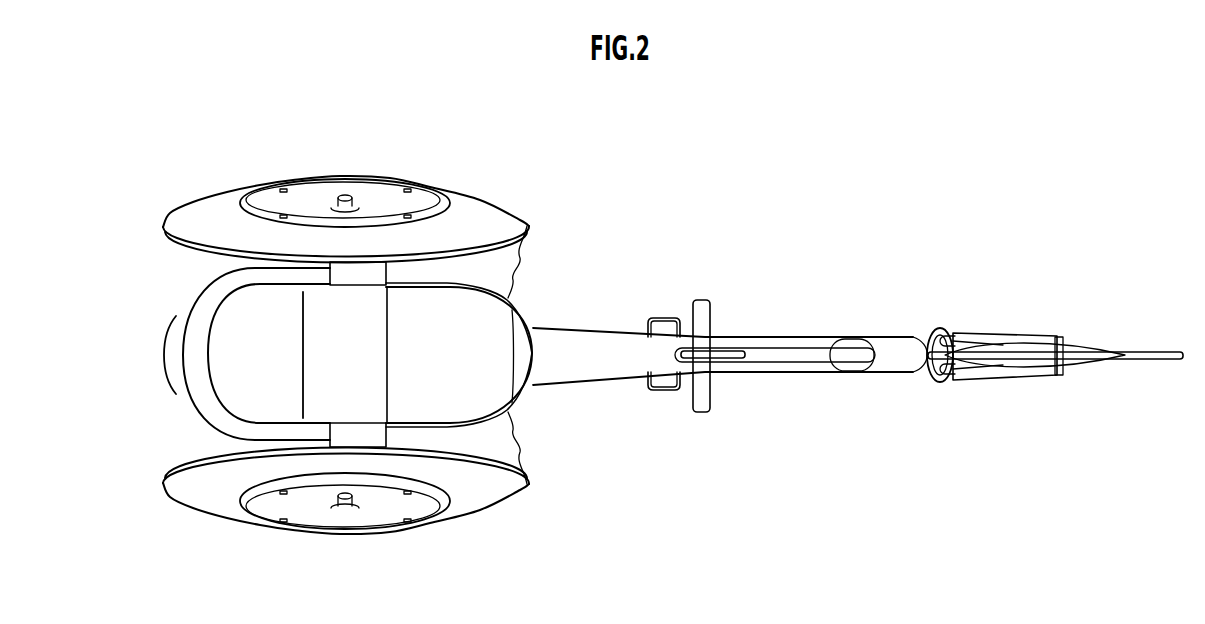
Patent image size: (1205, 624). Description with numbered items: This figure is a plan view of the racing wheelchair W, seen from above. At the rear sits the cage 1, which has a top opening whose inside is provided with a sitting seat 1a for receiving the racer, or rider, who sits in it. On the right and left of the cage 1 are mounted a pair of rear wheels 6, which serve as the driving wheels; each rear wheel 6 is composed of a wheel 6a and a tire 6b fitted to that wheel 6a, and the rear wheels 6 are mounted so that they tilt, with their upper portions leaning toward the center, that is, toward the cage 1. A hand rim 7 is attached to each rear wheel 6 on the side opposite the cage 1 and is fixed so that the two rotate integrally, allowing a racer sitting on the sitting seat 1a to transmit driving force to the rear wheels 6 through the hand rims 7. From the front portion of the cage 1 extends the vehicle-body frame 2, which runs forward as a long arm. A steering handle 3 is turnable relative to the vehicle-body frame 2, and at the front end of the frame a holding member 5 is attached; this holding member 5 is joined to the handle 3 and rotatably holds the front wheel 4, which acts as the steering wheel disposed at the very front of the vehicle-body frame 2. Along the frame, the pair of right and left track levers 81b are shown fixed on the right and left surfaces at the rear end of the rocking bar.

The wheelchair W is at (135, 222).
The cage 1 is at (207, 405).
The sitting seat 1a is at (227, 335).
The vehicle-body frame 2 is at (595, 340).
The steering handle 3 is at (702, 303).
The front wheel 4 is at (1147, 351).
The holding member 5 is at (1018, 332).
The rear wheel 6 is at (223, 181).
The wheel 6a is at (188, 212).
The tire 6b is at (167, 223).
The hand rim 7 is at (445, 203).
The track lever 81b is at (662, 317).